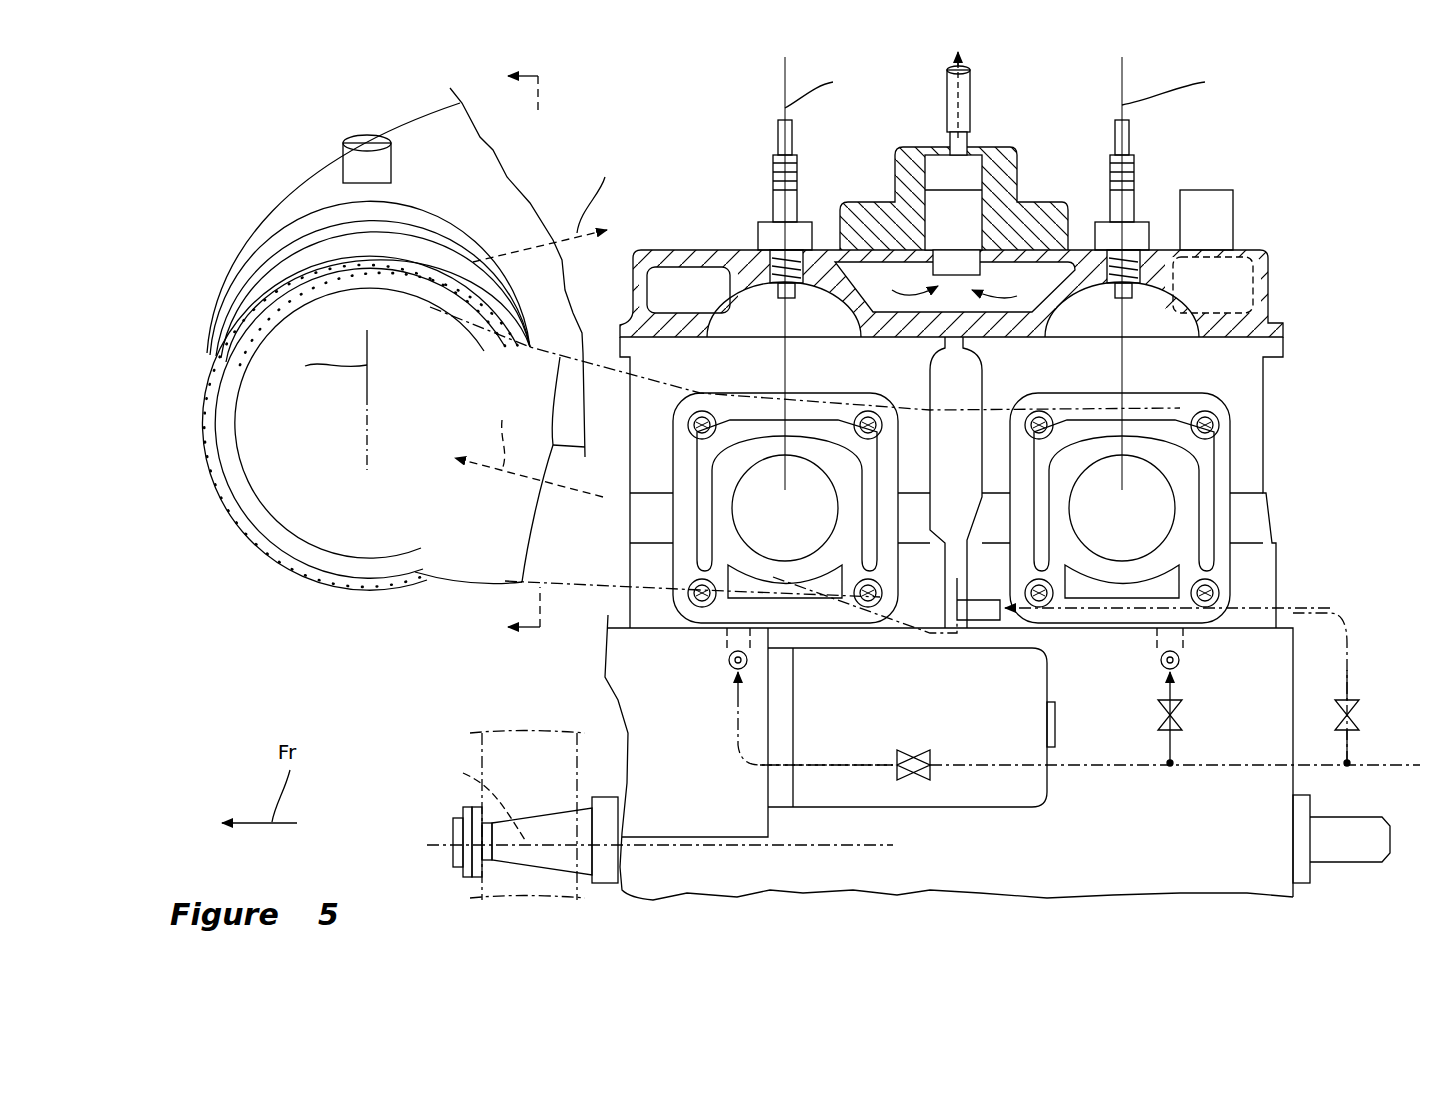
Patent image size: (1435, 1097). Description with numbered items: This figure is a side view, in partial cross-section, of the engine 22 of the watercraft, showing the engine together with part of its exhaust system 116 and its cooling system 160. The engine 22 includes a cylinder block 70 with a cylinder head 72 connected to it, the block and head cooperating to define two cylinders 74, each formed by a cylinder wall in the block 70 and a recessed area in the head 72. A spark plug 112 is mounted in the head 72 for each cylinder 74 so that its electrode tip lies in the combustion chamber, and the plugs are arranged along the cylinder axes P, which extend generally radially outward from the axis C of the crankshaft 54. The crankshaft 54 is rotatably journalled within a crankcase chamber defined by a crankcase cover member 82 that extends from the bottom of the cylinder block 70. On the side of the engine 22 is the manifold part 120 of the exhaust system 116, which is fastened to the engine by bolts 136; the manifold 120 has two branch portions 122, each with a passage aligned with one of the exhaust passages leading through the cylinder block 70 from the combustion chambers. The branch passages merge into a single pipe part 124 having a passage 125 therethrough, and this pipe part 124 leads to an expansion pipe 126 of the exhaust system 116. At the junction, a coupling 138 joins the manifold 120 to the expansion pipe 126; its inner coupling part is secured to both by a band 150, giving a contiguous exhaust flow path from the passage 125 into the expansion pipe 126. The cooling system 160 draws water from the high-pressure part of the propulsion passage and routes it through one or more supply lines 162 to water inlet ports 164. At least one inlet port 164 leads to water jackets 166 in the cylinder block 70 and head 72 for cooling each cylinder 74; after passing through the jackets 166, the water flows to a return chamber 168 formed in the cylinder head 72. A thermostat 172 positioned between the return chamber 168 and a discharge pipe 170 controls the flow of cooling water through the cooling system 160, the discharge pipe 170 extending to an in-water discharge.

The engine 22 is at (927, 476).
The crankshaft 54 is at (558, 806).
The cylinder block 70 is at (985, 277).
The cylinder head 72 is at (1245, 285).
The cylinder 74 is at (957, 527).
The crankcase cover member 82 is at (1280, 677).
The spark plug 112 is at (793, 210).
The exhaust system 116 is at (691, 351).
The manifold part 120 is at (452, 587).
The branch portion 122 is at (1160, 410).
The pipe part 124 is at (372, 537).
The passage 125 is at (300, 490).
The expansion pipe 126 is at (403, 125).
The bolt 136 is at (870, 422).
The coupling 138 is at (287, 245).
The band 150 is at (407, 205).
The cooling system 160 is at (927, 738).
The supply line 162 is at (1377, 763).
The water inlet port 164 is at (725, 650).
The water jacket 166 is at (868, 548).
The return chamber 168 is at (1013, 295).
The discharge pipe 170 is at (972, 97).
The thermostat 172 is at (953, 230).